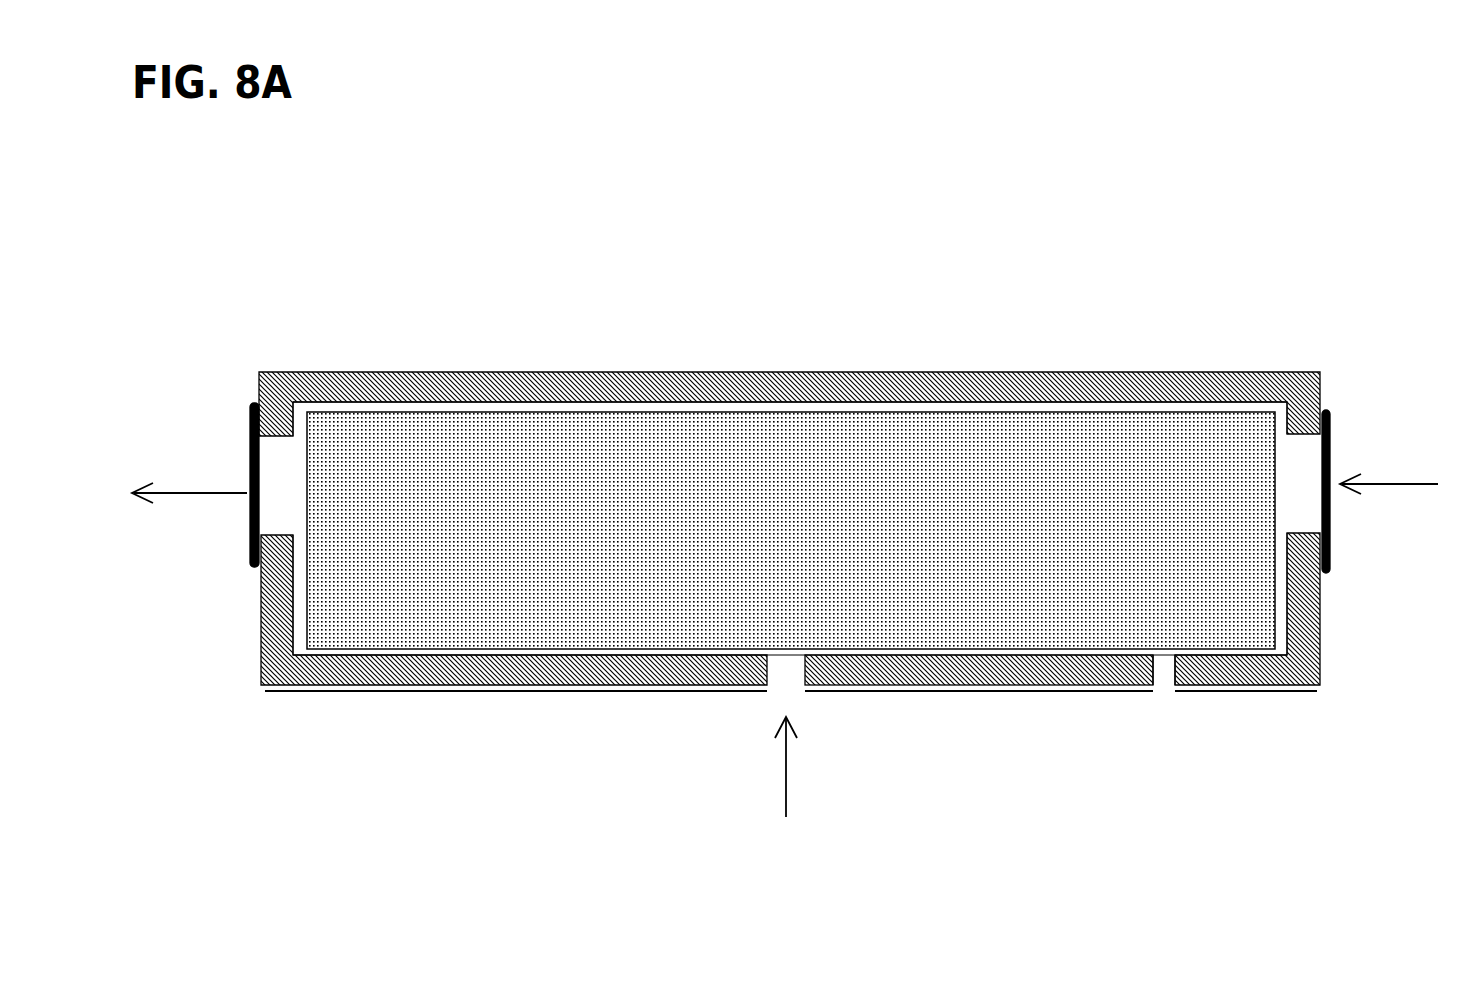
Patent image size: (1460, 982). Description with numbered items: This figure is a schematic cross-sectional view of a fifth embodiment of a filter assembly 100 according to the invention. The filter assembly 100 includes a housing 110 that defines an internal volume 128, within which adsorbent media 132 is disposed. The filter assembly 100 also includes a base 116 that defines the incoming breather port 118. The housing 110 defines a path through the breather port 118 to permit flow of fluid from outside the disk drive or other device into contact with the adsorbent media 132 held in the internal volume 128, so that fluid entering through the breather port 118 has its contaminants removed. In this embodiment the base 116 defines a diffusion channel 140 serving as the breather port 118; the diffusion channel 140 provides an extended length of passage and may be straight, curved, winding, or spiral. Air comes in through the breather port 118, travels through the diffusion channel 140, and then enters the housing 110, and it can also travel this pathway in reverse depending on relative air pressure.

The filter assembly 100 is at (606, 283).
The housing 110 is at (1010, 356).
The base 116 is at (1264, 670).
The breather port 118 is at (790, 784).
The internal volume 128 is at (390, 408).
The adsorbent media 132 is at (1063, 463).
The diffusion channel 140 is at (1158, 657).